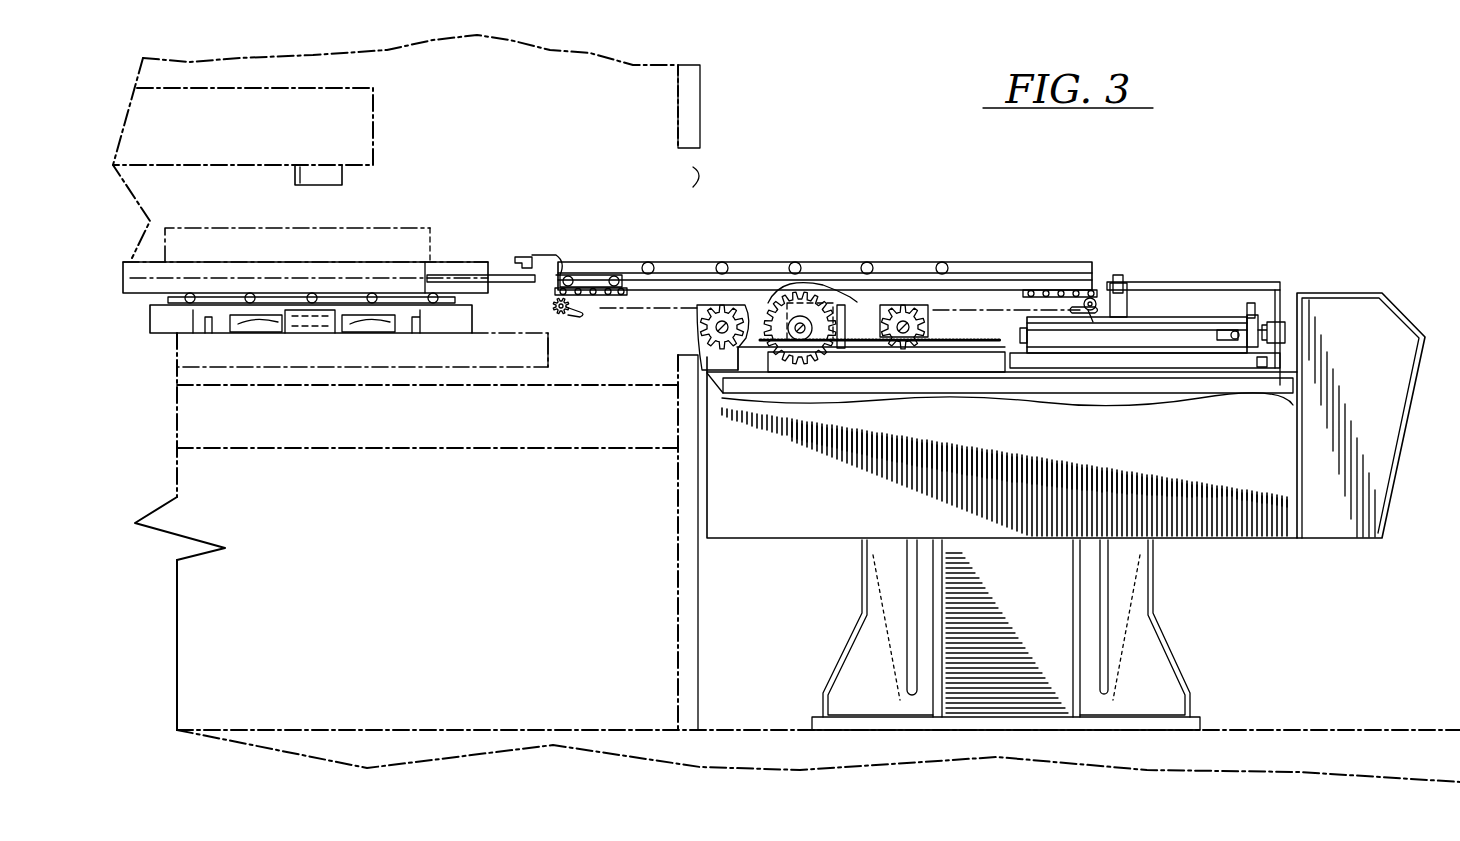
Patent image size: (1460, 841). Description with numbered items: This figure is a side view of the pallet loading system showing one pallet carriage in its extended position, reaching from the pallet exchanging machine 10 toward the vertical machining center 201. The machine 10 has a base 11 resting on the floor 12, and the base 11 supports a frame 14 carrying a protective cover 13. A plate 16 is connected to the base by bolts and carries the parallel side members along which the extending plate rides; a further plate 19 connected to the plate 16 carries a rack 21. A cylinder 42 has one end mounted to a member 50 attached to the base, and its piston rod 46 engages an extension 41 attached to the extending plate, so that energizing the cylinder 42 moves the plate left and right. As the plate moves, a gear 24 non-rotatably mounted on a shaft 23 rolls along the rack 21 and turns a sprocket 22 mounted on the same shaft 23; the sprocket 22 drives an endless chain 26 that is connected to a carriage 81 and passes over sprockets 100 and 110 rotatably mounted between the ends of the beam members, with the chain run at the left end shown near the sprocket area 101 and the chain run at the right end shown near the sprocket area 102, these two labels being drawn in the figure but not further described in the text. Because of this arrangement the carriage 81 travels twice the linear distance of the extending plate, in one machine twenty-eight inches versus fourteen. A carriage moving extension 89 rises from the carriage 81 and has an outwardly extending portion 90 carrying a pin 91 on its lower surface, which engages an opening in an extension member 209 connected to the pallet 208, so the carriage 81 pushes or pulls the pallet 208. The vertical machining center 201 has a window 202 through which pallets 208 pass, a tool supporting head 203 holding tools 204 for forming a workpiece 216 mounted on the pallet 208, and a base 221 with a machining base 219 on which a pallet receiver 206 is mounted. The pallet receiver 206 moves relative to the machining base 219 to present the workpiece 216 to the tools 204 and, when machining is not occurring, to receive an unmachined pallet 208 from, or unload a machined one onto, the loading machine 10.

The pallet exchanging machine 10 is at (1265, 222).
The base 11 is at (1150, 663).
The floor 12 is at (1232, 730).
The protective cover 13 is at (1363, 440).
The frame 14 is at (1237, 383).
The plate 16 is at (1178, 372).
The plate 19 is at (1000, 362).
The rack 21 is at (925, 347).
The sprocket 22 is at (740, 342).
The shaft 23 is at (805, 340).
The gear 24 is at (792, 340).
The endless chain 26 is at (768, 327).
The extension 41 is at (846, 303).
The cylinder 42 is at (1190, 328).
The piston rod 46 is at (957, 337).
The member 50 is at (1283, 337).
The carriage 81 is at (613, 260).
The carriage moving extension 89 is at (600, 277).
The outwardly extending portion 90 is at (548, 262).
The pin 91 is at (513, 260).
The sprocket 100 is at (563, 303).
The sprocket 101 is at (567, 305).
The chain end 102 is at (1085, 298).
The sprocket 110 is at (1122, 300).
The vertical machining center 201 is at (697, 103).
The window 202 is at (697, 163).
The tool supporting head 203 is at (343, 116).
The tools 204 is at (312, 181).
The pallet receiver 206 is at (163, 322).
The pallet 208 is at (443, 260).
The extension member 209 is at (497, 272).
The workpiece 216 is at (362, 252).
The machining base 219 is at (235, 357).
The base 221 is at (287, 587).